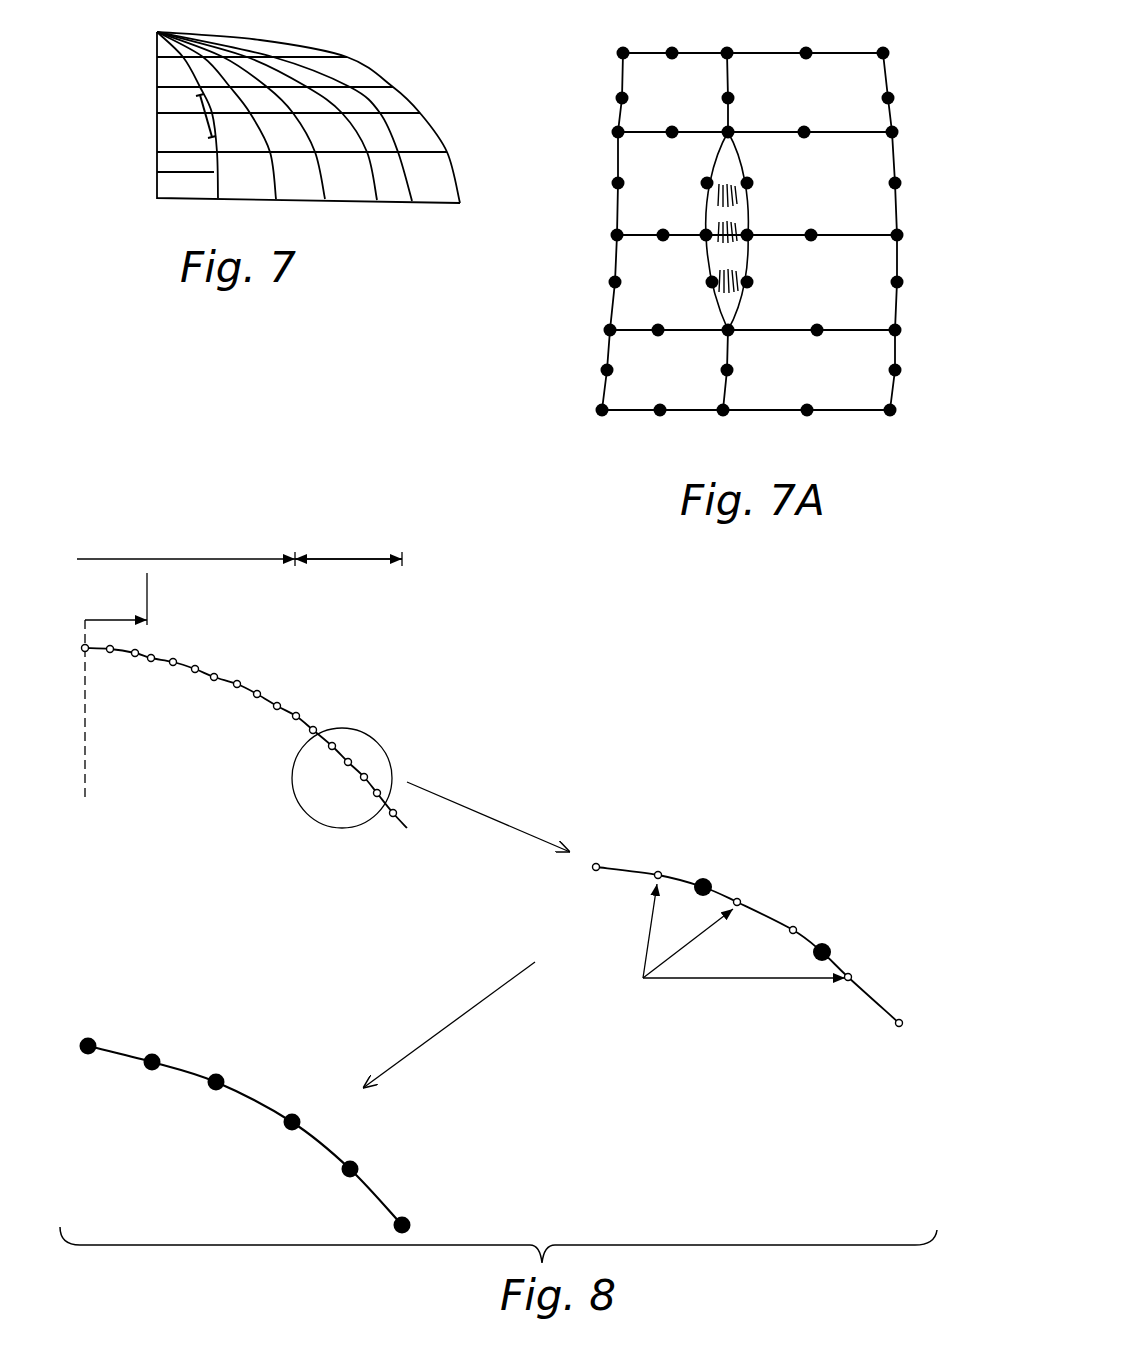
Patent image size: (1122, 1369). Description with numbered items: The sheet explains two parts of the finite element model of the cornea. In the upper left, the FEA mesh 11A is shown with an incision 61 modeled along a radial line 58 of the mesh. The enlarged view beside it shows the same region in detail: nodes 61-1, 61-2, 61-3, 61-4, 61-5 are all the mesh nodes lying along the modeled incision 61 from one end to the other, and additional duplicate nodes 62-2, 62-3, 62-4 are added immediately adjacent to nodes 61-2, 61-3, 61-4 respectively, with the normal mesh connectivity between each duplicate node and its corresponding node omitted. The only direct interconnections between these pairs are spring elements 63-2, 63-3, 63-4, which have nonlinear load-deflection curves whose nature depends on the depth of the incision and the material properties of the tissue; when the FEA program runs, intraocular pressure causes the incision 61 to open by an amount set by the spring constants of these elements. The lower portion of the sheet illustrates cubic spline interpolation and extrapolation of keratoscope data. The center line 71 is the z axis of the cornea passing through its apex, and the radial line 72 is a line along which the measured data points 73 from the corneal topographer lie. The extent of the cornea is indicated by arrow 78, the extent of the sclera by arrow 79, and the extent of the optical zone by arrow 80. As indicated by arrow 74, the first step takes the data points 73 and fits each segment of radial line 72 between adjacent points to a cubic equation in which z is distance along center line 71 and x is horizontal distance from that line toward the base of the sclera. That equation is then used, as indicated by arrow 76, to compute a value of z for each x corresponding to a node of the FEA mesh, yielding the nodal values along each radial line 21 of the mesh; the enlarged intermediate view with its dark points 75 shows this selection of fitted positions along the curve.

In FIG. 7, the FEA mesh 11A is at (386, 66).
In FIG. 7, the radial line 58 is at (214, 172).
In FIG. 7A, the radial line 58 is at (727, 76).
In FIG. 7, the incision 61 is at (198, 106).
In FIG. 7A, the incision 61 is at (707, 318).
In FIG. 7A, the node 61-1 is at (731, 130).
In FIG. 7A, the node 61-2 is at (752, 185).
In FIG. 7A, the node 61-3 is at (752, 240).
In FIG. 7A, the node 61-4 is at (752, 283).
In FIG. 7A, the node 61-5 is at (733, 336).
In FIG. 7A, the duplicate node 62-2 is at (702, 186).
In FIG. 7A, the duplicate node 62-3 is at (705, 238).
In FIG. 7A, the duplicate node 62-4 is at (708, 284).
In FIG. 7A, the spring element 63-2 is at (732, 186).
In FIG. 7A, the spring element 63-3 is at (728, 232).
In FIG. 7A, the spring element 63-4 is at (730, 296).
In FIG. 8, the center line 71 is at (87, 743).
In FIG. 8, the radial line 72 is at (182, 667).
In FIG. 8, the measured data point 73 is at (216, 676).
In FIG. 8, the arrow 74 is at (467, 803).
In FIG. 8, the selected control point 75 is at (708, 877).
In FIG. 8, the arrow 76 is at (488, 998).
In FIG. 8, the arrow 78 is at (188, 559).
In FIG. 8, the arrow 79 is at (340, 560).
In FIG. 8, the arrow 80 is at (110, 623).
In FIG. 8, the radial line 21 is at (317, 1142).